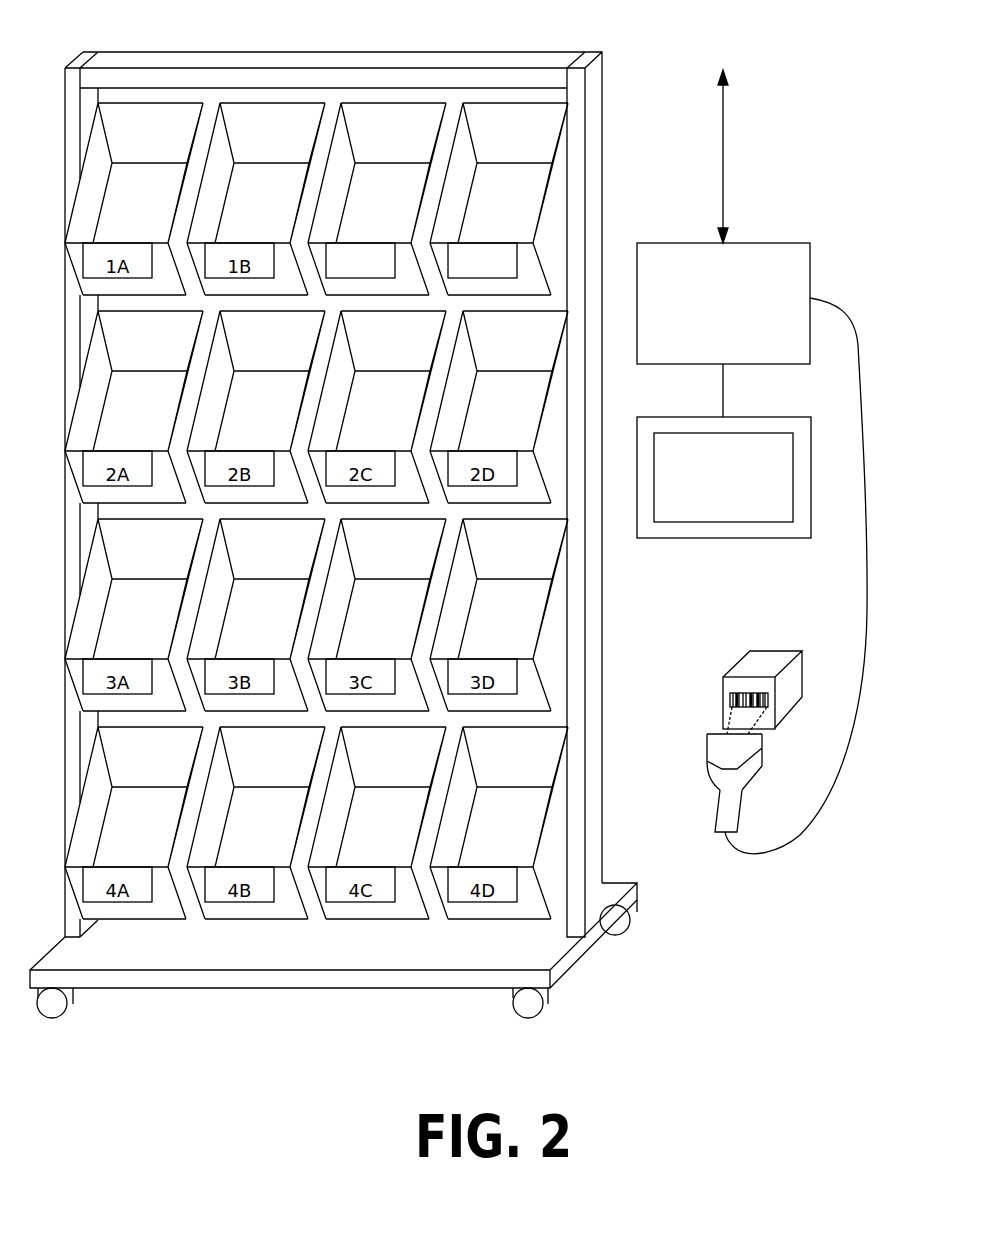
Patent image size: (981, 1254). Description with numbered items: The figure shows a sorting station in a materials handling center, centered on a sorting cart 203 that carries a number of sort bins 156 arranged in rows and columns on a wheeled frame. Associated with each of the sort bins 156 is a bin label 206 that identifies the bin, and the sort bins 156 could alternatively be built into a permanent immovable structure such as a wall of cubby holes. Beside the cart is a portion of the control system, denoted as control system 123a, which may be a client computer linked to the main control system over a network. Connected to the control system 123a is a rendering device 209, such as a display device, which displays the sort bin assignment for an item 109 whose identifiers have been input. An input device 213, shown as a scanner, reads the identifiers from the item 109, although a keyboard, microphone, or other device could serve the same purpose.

The sort bin 156 is at (393, 135).
The bin label 206 is at (510, 257).
The sorting cart 203 is at (347, 955).
The control system 123a is at (703, 343).
The rendering device 209 is at (720, 538).
The item 109 is at (758, 663).
The input device 213 is at (722, 757).